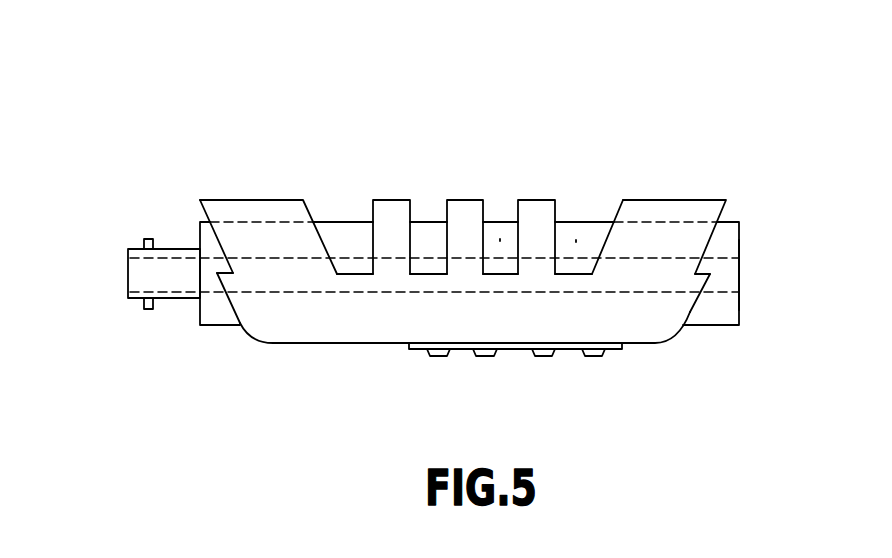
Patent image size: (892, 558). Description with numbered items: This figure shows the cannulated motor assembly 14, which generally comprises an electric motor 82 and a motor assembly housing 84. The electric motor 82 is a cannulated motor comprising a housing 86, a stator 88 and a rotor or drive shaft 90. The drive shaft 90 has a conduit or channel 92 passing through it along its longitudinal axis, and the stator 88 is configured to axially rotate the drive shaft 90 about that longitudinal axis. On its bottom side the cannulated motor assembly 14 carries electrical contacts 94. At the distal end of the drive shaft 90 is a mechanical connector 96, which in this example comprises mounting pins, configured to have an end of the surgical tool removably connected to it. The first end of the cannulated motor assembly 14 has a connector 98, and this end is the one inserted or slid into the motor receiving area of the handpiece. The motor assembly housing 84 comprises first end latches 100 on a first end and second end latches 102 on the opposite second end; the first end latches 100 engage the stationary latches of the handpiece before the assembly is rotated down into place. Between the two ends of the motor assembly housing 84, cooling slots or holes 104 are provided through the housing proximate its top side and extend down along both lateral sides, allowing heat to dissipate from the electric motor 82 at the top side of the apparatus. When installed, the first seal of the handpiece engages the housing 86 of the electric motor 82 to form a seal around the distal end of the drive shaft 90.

The cannulated motor assembly 14 is at (281, 98).
The electric motor 82 is at (343, 222).
The motor assembly housing 84 is at (677, 199).
The housing 86 is at (585, 221).
The stator 88 is at (253, 222).
The drive shaft 90 is at (128, 275).
The conduit or channel 92 is at (727, 280).
The electrical contacts 94 is at (437, 357).
The mechanical connector 96 is at (128, 299).
The connector 98 is at (148, 239).
The first end latches 100 is at (228, 268).
The second end latches 102 is at (703, 272).
The cooling slots or holes 104 is at (500, 239).